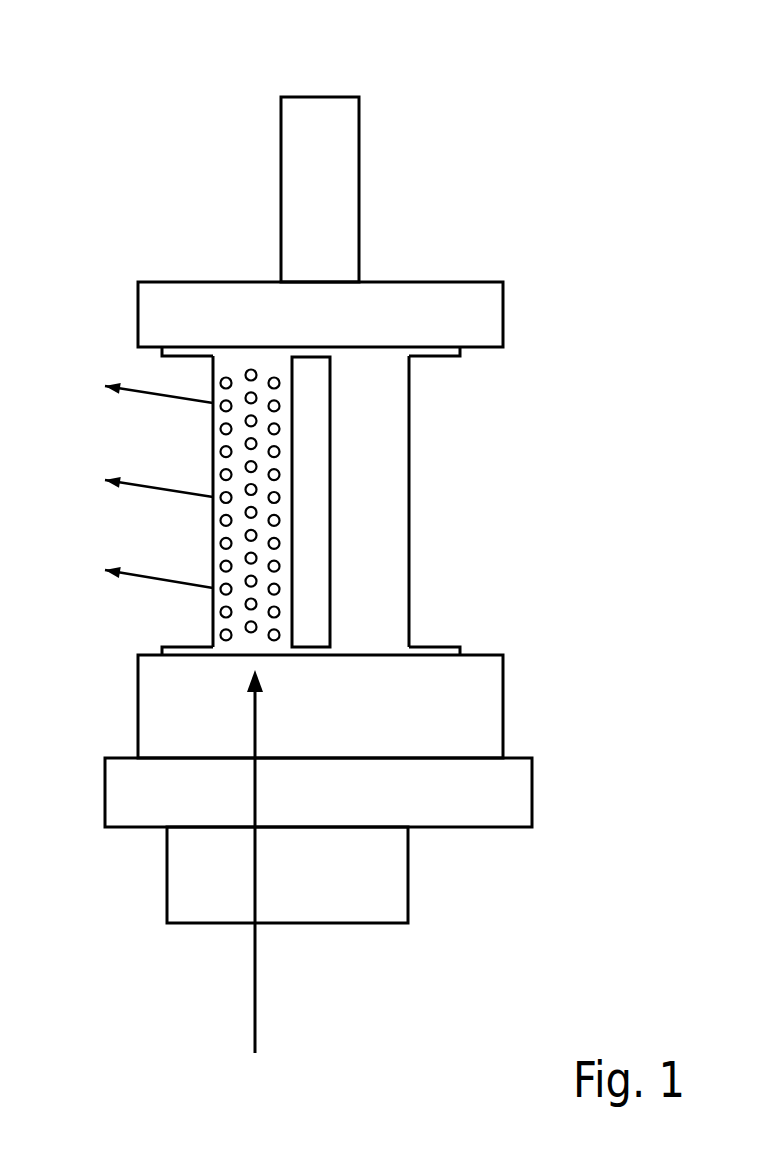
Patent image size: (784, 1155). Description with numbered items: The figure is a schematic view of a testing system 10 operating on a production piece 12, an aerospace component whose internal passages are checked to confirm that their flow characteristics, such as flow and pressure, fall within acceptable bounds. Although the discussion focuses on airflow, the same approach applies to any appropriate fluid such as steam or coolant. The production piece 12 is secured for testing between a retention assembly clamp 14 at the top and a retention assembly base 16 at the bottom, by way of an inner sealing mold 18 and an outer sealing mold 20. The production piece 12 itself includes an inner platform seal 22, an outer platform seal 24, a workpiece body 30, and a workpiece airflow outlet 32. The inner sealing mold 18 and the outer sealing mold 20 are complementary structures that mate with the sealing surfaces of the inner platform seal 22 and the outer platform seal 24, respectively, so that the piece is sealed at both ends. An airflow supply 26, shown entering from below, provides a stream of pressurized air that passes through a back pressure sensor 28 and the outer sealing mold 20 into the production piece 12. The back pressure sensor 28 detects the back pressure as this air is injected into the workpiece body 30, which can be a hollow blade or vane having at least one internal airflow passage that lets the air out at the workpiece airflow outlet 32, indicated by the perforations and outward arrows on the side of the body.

The testing system 10 is at (613, 117).
The production piece 12 is at (409, 505).
The retention assembly clamp 14 is at (359, 192).
The retention assembly base 16 is at (532, 792).
The inner sealing mold 18 is at (503, 308).
The outer sealing mold 20 is at (483, 709).
The inner platform seal 22 is at (443, 358).
The outer platform seal 24 is at (448, 647).
The airflow supply 26 is at (265, 992).
The back pressure sensor 28 is at (200, 853).
The workpiece body 30 is at (200, 543).
The workpiece airflow outlet 32 is at (226, 474).